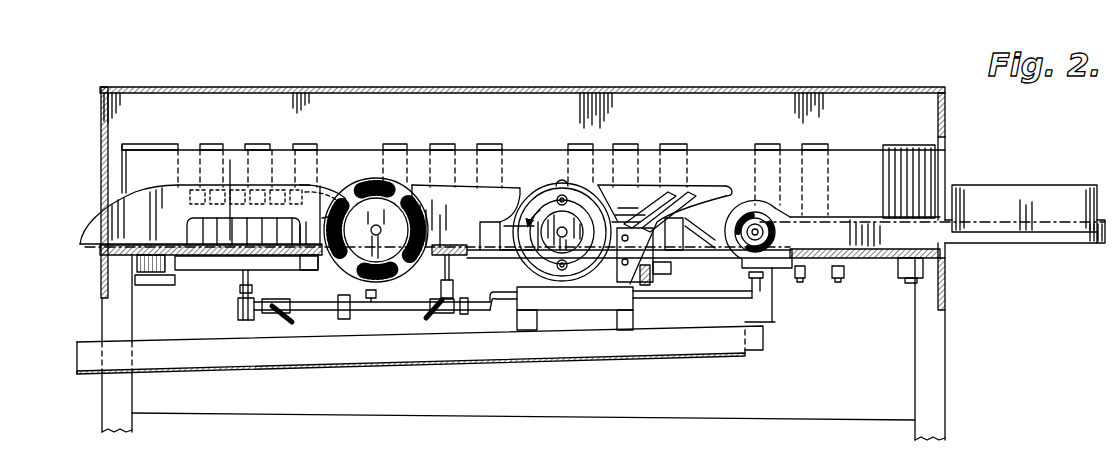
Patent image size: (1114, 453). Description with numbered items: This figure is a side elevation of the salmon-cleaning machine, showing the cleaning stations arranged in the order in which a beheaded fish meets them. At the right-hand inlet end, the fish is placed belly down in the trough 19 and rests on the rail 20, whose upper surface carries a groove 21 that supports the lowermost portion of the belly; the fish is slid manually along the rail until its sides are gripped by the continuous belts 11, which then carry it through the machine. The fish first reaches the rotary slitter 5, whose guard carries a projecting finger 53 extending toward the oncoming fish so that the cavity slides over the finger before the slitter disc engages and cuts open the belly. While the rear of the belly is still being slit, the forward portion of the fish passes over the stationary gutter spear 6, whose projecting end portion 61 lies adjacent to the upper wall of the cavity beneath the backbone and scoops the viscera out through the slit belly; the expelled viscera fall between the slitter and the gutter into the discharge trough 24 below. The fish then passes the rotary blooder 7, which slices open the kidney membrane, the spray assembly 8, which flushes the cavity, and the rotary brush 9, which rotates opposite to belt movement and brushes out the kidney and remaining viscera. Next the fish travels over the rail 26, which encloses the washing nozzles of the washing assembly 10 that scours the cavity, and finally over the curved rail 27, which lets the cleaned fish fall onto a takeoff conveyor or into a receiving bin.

The rotary slitter 5 is at (748, 197).
The gutter spear 6 is at (652, 178).
The rotary blooder 7 is at (545, 177).
The spray assembly 8 is at (462, 177).
The rotary brush 9 is at (363, 178).
The washing assembly 10 is at (192, 180).
The continuous belts 11 is at (218, 232).
The trough 19 is at (1005, 193).
The rail 20 is at (1030, 240).
The groove 21 is at (925, 190).
The discharge trough 24 is at (697, 343).
The rail 26 is at (318, 195).
The rail 27 is at (112, 212).
The projecting finger 53 is at (768, 206).
The projecting end portion 61 is at (700, 190).